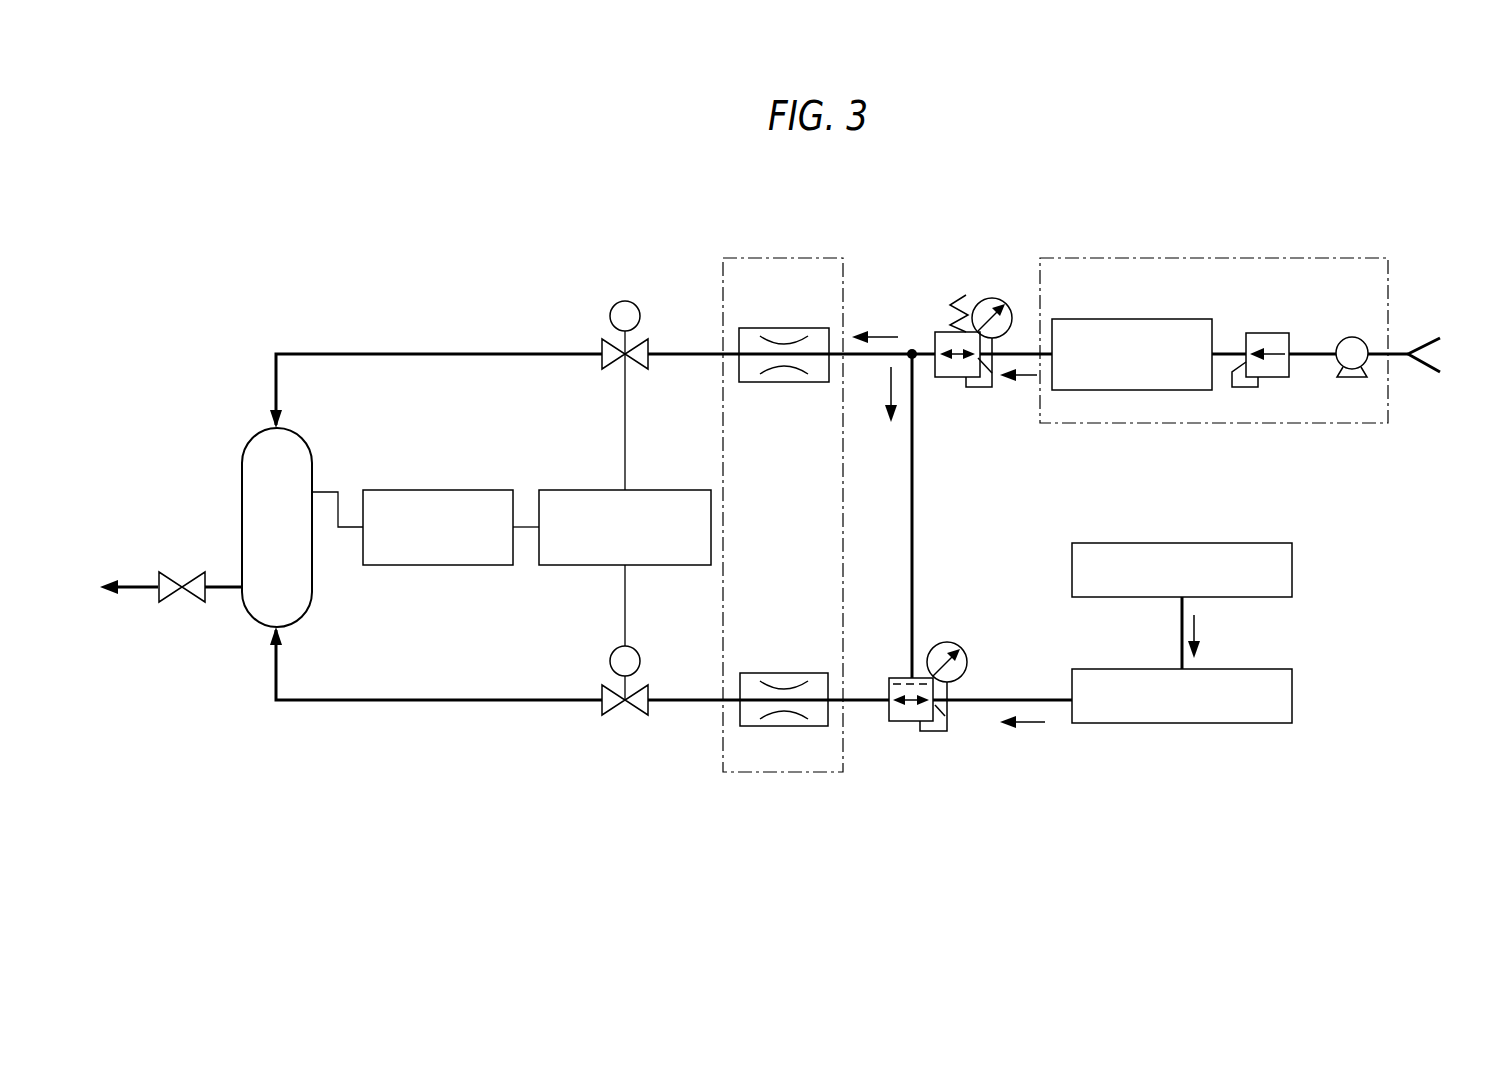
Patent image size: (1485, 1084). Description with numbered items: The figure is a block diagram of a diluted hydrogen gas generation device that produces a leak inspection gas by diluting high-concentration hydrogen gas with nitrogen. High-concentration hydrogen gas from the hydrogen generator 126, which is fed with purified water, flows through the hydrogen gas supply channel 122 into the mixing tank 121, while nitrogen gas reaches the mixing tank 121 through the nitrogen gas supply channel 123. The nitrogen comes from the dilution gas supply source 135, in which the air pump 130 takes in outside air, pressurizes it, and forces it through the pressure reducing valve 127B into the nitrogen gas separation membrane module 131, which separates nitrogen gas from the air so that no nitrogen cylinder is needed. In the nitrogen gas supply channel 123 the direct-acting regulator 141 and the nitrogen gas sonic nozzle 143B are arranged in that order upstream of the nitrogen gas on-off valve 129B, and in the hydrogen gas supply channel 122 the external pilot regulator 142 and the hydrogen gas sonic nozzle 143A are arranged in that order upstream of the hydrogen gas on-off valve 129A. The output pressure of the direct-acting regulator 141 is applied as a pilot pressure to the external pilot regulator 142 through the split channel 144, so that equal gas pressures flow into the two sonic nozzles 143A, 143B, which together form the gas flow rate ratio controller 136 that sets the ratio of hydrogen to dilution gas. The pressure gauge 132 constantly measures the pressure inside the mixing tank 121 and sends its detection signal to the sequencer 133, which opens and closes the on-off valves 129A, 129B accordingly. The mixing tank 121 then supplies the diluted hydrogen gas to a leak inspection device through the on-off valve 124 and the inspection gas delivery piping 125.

The mixing tank 121 is at (242, 468).
The hydrogen gas supply channel 122 is at (520, 697).
The nitrogen gas supply channel 123 is at (520, 353).
The on-off valve 124 is at (191, 574).
The inspection gas delivery piping 125 is at (140, 584).
The hydrogen generator 126 is at (1292, 698).
The pressure reducing valve 127B is at (1257, 333).
The hydrogen gas on-off valve 129A is at (614, 712).
The nitrogen gas on-off valve 129B is at (650, 345).
The air pump 130 is at (1356, 336).
The nitrogen gas separation membrane module 131 is at (1132, 319).
The pressure gauge 132 is at (439, 489).
The sequencer 133 is at (674, 489).
The dilution gas supply source 135 is at (1262, 258).
The gas flow rate ratio controller 136 is at (790, 258).
The direct-acting regulator 141 is at (934, 340).
The external pilot regulator 142 is at (889, 690).
The hydrogen gas sonic nozzle 143A is at (783, 673).
The nitrogen gas sonic nozzle 143B is at (785, 384).
The split channel 144 is at (915, 511).